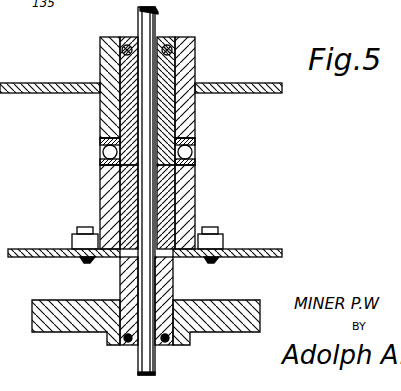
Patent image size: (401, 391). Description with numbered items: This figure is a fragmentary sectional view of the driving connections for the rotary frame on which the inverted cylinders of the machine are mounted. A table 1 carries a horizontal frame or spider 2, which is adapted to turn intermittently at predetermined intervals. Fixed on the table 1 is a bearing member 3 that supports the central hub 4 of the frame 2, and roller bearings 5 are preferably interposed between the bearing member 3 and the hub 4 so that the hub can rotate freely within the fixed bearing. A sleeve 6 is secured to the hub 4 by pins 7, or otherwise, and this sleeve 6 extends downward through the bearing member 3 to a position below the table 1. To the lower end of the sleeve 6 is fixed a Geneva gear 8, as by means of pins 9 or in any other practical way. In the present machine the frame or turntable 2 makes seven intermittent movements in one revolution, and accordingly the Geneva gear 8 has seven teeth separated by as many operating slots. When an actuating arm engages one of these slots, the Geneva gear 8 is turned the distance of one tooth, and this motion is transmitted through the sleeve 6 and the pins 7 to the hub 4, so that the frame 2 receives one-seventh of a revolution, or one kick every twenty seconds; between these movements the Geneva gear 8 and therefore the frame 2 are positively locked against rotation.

The table 1 is at (27, 249).
The horizontal frame or spider 2 is at (26, 83).
The bearing member 3 is at (196, 183).
The central hub 4 is at (196, 119).
The roller bearings 5 is at (191, 153).
The sleeve 6 is at (134, 62).
The pins 7 is at (127, 44).
The Geneva gear 8 is at (226, 307).
The pins 9 is at (126, 346).